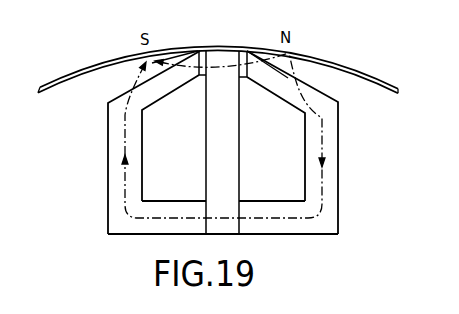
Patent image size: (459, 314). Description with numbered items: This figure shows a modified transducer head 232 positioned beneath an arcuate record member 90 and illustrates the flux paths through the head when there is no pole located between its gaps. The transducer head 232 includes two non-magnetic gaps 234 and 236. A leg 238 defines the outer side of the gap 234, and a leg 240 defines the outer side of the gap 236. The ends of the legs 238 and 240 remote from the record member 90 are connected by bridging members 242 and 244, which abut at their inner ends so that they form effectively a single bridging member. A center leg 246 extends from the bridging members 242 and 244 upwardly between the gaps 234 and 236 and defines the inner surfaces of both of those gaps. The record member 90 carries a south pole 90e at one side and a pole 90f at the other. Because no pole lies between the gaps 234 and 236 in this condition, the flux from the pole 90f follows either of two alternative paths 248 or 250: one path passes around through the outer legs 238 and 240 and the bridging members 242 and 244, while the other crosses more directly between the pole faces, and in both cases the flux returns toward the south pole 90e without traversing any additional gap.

The record member 90 is at (60, 80).
The south pole 90e is at (143, 50).
The pole 90f is at (290, 50).
The transducer head 232 is at (293, 237).
The non-magnetic gap 234 is at (202, 77).
The non-magnetic gap 236 is at (243, 78).
The leg 238 is at (108, 135).
The leg 240 is at (338, 143).
The bridging member 242 is at (182, 198).
The bridging member 244 is at (280, 200).
The center leg 246 is at (207, 137).
The flux path 248 is at (328, 184).
The flux path 250 is at (211, 70).